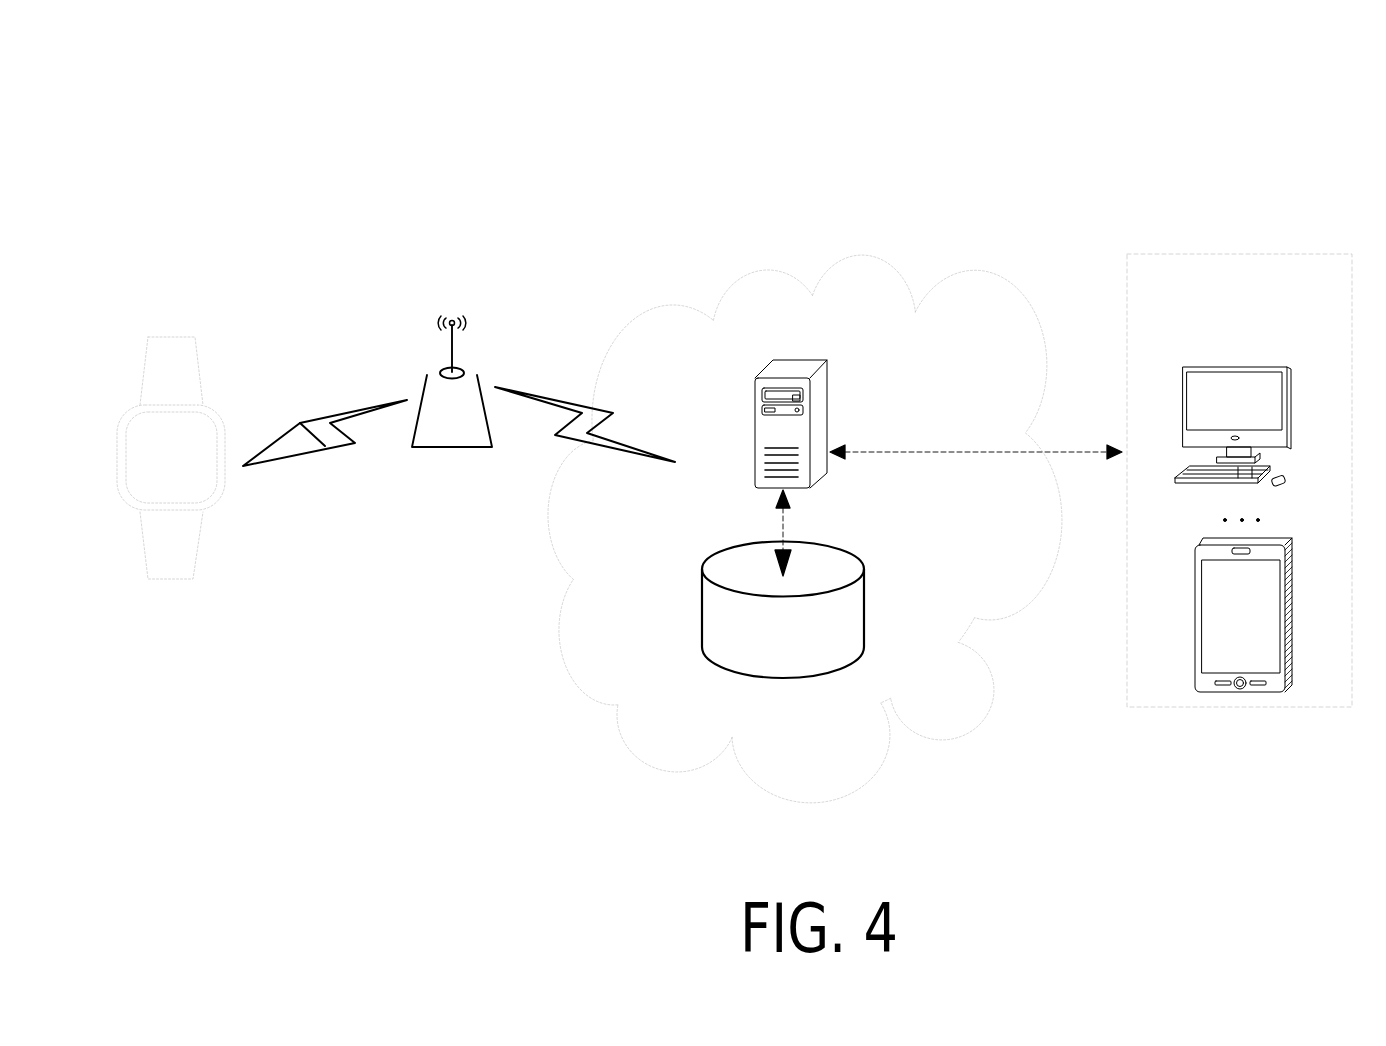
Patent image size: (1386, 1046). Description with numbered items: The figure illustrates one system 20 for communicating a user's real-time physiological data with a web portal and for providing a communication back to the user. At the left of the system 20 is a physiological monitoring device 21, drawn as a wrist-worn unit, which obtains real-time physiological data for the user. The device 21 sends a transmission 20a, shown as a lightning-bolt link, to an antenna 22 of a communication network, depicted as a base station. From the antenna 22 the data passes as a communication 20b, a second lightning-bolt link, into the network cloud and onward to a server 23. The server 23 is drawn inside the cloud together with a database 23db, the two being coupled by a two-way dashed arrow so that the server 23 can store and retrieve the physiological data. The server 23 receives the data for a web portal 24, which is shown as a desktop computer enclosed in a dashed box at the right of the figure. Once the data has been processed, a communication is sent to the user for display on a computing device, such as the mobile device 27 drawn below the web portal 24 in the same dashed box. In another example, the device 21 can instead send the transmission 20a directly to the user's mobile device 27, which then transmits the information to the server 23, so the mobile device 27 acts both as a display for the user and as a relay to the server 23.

The system 20 is at (805, 148).
The physiological monitoring device 21 is at (170, 540).
The transmission 20a is at (290, 458).
The antenna 22 is at (430, 432).
The communication 20b is at (555, 393).
The server 23 is at (818, 358).
The database 23db is at (837, 551).
The web portal 24 is at (1262, 365).
The mobile device 27 is at (1267, 537).